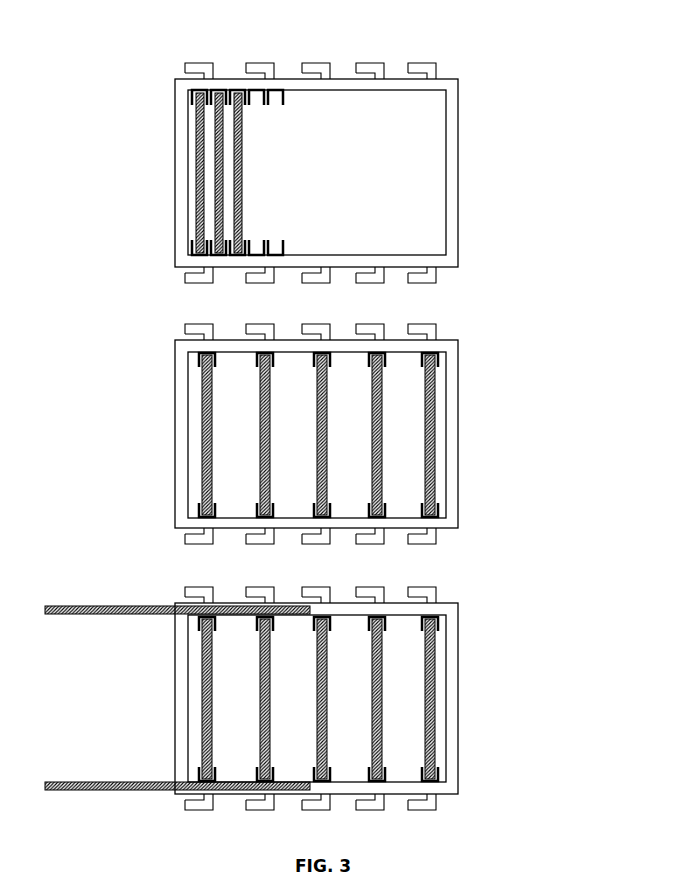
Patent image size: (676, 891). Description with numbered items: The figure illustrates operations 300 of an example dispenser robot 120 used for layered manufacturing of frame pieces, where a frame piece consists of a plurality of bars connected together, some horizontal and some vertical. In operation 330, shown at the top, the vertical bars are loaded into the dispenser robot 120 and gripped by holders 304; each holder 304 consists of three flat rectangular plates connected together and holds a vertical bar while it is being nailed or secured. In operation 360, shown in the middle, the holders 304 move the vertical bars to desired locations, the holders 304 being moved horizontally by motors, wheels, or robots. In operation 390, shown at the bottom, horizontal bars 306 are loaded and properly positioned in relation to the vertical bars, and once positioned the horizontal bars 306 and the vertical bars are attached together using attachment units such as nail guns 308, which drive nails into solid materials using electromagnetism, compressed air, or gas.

The operations 300 is at (621, 40).
The dispenser robot 120 is at (458, 110).
The holders 304 is at (191, 90).
The horizontal bars 306 is at (141, 605).
The nail gun 308 is at (435, 600).
The operation 330 is at (496, 204).
The operation 360 is at (496, 446).
The operation 390 is at (488, 711).